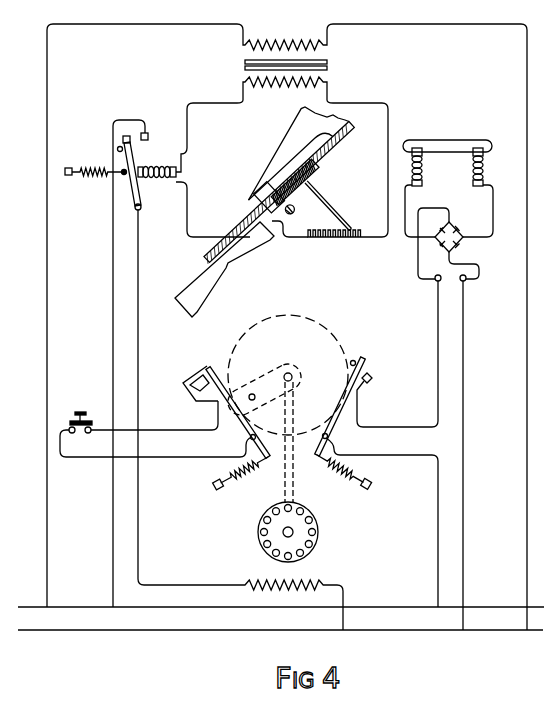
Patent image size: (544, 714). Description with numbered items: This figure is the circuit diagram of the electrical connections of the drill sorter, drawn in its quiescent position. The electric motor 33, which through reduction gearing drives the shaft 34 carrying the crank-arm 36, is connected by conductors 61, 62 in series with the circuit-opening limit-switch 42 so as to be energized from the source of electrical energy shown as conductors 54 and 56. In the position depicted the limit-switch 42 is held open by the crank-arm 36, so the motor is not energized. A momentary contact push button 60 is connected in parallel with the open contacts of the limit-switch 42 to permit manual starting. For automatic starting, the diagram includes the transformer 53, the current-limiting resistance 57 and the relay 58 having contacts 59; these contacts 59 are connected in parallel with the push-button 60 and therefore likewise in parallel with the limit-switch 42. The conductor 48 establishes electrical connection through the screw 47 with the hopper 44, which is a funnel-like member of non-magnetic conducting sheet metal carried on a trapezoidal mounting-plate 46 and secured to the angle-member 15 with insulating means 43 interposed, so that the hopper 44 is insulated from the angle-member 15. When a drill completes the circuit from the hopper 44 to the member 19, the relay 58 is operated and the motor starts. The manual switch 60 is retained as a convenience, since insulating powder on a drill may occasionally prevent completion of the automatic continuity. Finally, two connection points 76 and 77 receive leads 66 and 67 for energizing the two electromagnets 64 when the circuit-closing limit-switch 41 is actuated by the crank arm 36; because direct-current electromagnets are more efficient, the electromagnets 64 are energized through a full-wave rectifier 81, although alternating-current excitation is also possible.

The transformer 53 is at (285, 42).
The contacts 59 is at (128, 130).
The relay 58 is at (123, 192).
The conductor 62 is at (112, 531).
The conductor 61 is at (138, 531).
The hopper 44 is at (286, 143).
The mounting-plate 46 is at (338, 140).
The insulating means 43 is at (312, 170).
The screw 47 is at (278, 190).
The angle-member 15 is at (342, 207).
The member 19 is at (242, 240).
The current-limiting resistance 57 is at (333, 240).
The electrical connection 48 is at (293, 242).
The electromagnet 64 is at (417, 147).
The full-wave rectifier 81 is at (455, 230).
The connection point 76 is at (435, 281).
The connection point 77 is at (465, 281).
The lead 67 is at (463, 531).
The lead 66 is at (438, 531).
The crank-arm 36 is at (262, 374).
The shaft 34 is at (285, 484).
The electric motor 33 is at (320, 532).
The circuit-opening limit-switch 42 is at (193, 372).
The circuit-closing limit-switch 41 is at (370, 373).
The push button 60 is at (80, 436).
The conductor 54 is at (24, 605).
The conductor 56 is at (24, 632).